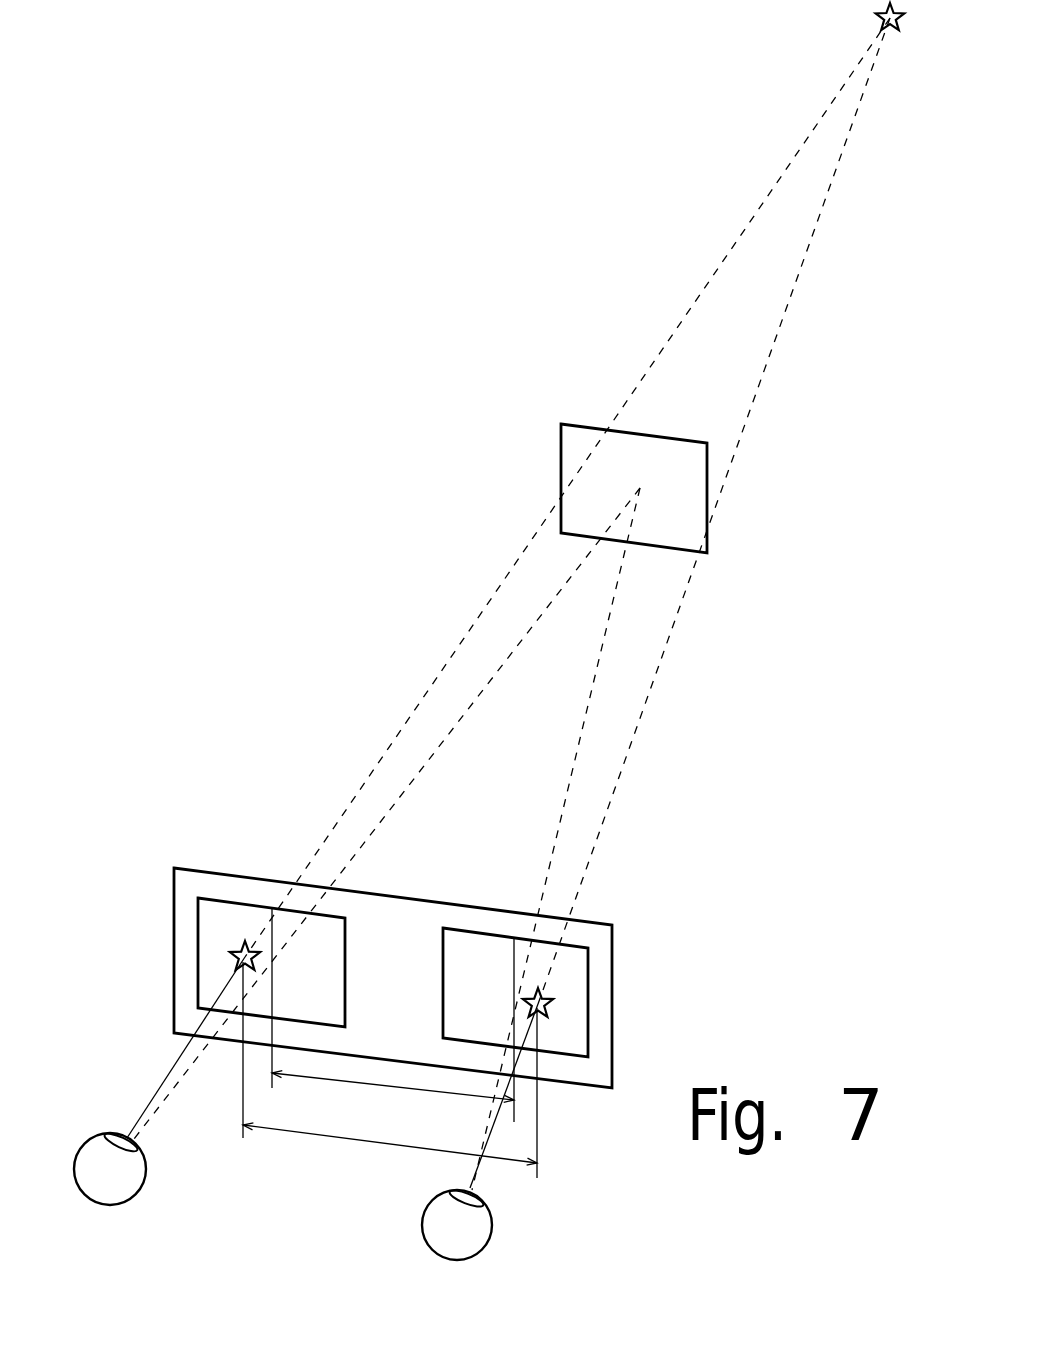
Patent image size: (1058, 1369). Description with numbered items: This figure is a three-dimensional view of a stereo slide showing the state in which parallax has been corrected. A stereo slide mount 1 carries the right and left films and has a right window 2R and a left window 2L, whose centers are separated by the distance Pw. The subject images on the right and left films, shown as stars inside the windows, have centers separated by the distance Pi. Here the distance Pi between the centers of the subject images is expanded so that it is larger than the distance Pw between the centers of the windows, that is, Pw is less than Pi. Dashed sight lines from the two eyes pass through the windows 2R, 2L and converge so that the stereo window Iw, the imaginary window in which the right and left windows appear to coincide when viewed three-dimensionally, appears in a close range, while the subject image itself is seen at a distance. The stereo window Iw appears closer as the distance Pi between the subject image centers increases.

The stereo slide mount 1 is at (225, 862).
The left window 2L is at (197, 946).
The right window 2R is at (585, 1047).
The stereo window Iw is at (561, 470).
The distance between the centers of the right and left windows Pw is at (393, 1096).
The distance between the centers of the right and left subject images Pi is at (390, 1147).